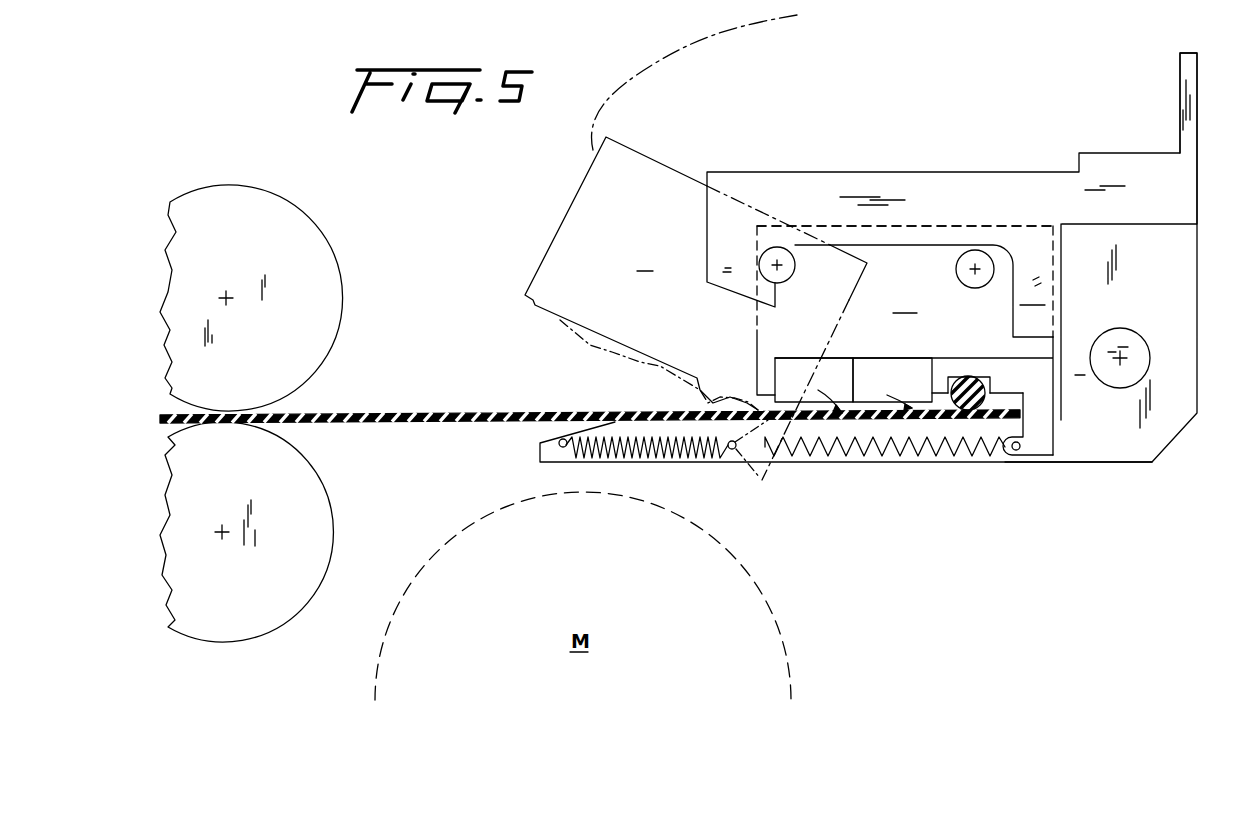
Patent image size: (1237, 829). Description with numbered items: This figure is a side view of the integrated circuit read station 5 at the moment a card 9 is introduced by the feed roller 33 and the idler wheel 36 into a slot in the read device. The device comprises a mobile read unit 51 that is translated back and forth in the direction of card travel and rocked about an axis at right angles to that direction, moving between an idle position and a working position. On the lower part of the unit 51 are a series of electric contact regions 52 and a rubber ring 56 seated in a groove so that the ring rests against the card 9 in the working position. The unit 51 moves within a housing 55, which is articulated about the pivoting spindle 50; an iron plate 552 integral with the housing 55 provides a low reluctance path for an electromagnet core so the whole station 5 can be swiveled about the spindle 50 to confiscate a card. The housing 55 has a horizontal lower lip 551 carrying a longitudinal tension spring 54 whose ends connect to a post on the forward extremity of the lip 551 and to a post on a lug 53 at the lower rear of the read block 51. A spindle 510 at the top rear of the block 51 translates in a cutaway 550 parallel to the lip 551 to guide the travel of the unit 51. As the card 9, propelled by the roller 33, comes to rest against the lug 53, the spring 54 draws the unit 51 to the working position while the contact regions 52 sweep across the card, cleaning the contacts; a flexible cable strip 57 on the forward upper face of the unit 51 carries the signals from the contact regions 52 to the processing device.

The read station 5 is at (1047, 64).
The card 9 is at (400, 412).
The feed roller 33 is at (312, 238).
The idler wheel 36 is at (325, 540).
The pivoting spindle 50 is at (1143, 355).
The mobile read unit 51 is at (645, 190).
The electric contact regions 52 is at (565, 332).
The lug 53 is at (1043, 442).
The tension spring 54 is at (680, 455).
The housing 55 is at (846, 185).
The rubber ring 56 is at (968, 415).
The flexible cable strip 57 is at (707, 42).
The spindle 510 is at (775, 290).
The cutaway 550 is at (925, 245).
The lower lip 551 is at (540, 452).
The iron plate 552 is at (1187, 60).